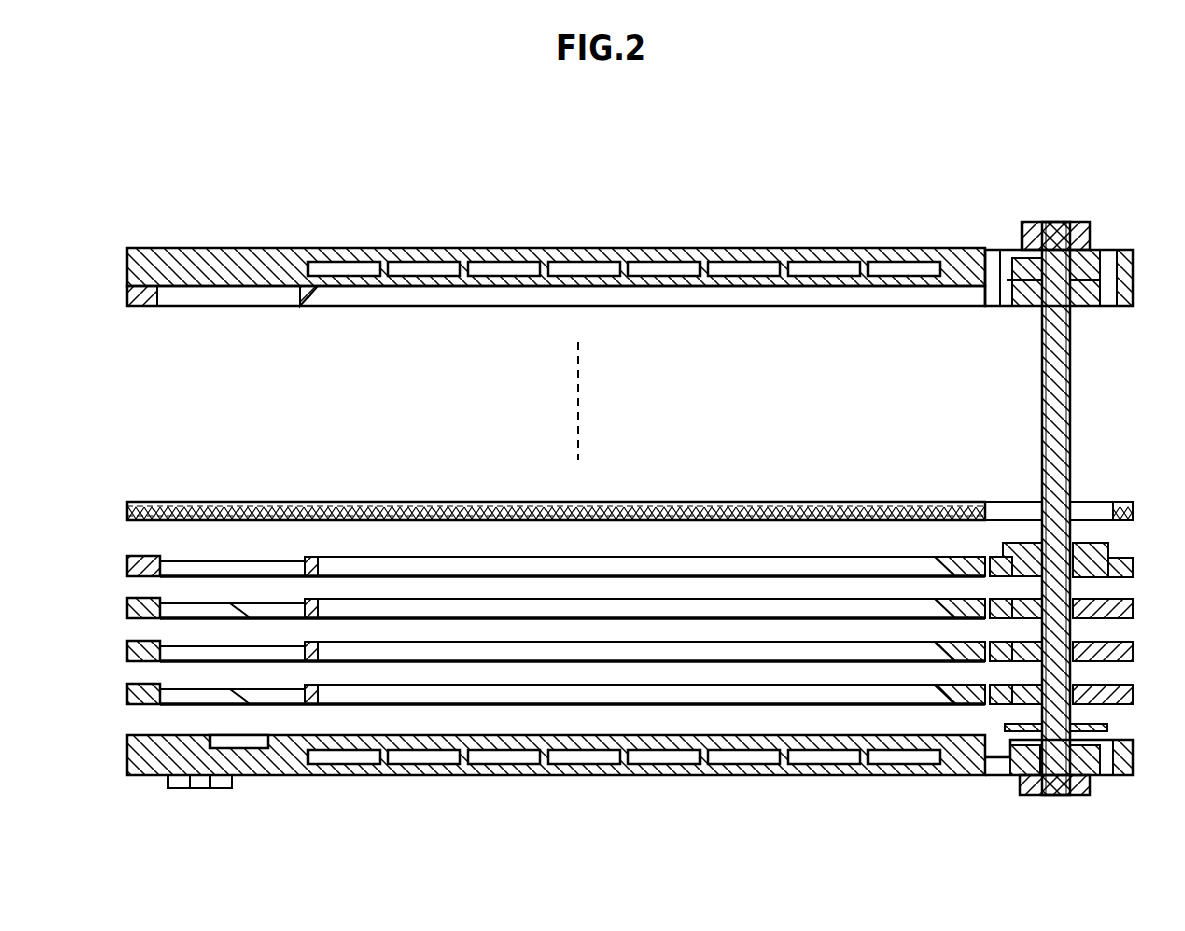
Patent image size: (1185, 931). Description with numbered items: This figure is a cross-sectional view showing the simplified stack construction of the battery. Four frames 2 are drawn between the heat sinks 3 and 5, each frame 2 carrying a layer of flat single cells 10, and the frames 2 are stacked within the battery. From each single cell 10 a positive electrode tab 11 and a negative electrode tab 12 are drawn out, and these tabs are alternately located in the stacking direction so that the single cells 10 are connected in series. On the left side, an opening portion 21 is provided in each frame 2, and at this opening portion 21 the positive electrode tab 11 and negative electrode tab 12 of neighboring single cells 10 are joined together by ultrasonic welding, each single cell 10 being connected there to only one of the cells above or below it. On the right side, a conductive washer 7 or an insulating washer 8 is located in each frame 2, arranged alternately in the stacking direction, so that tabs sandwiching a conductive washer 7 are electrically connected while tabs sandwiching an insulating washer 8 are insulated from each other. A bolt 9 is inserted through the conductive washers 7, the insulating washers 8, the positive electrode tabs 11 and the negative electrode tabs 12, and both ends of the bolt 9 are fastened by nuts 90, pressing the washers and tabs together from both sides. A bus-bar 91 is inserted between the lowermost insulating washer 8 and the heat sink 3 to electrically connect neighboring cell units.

The frame 2 is at (969, 695).
The heat sink 3 is at (276, 253).
The heat sink 5 is at (352, 501).
The conductive washer 7 is at (1086, 544).
The insulating washer 8 is at (1082, 598).
The bolt 9 is at (1058, 221).
The single cell 10 is at (797, 298).
The positive electrode tab 11 is at (287, 656).
The negative electrode tab 12 is at (262, 608).
The opening portion 21 is at (172, 580).
The nut 90 is at (1090, 223).
The bus-bar 91 is at (1090, 726).